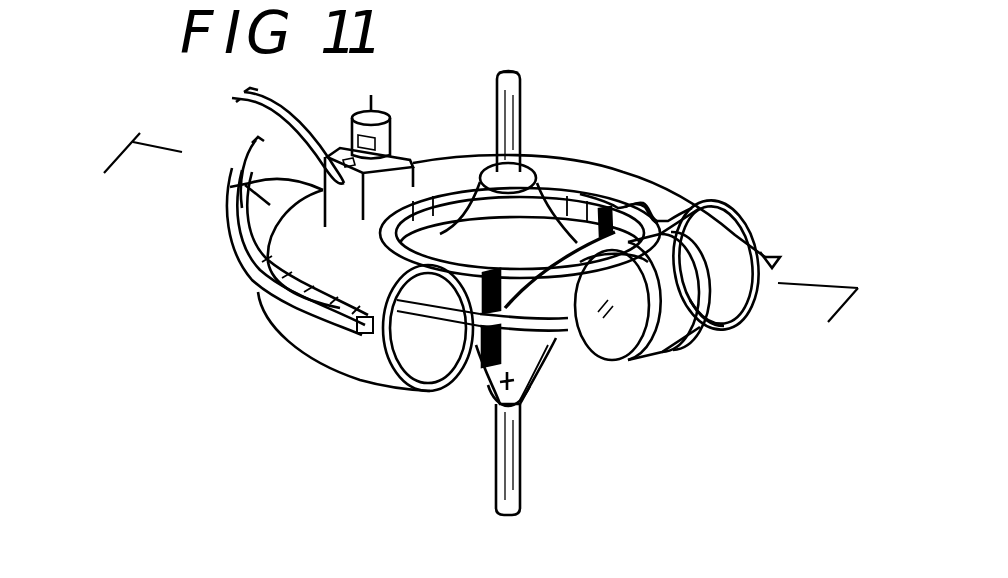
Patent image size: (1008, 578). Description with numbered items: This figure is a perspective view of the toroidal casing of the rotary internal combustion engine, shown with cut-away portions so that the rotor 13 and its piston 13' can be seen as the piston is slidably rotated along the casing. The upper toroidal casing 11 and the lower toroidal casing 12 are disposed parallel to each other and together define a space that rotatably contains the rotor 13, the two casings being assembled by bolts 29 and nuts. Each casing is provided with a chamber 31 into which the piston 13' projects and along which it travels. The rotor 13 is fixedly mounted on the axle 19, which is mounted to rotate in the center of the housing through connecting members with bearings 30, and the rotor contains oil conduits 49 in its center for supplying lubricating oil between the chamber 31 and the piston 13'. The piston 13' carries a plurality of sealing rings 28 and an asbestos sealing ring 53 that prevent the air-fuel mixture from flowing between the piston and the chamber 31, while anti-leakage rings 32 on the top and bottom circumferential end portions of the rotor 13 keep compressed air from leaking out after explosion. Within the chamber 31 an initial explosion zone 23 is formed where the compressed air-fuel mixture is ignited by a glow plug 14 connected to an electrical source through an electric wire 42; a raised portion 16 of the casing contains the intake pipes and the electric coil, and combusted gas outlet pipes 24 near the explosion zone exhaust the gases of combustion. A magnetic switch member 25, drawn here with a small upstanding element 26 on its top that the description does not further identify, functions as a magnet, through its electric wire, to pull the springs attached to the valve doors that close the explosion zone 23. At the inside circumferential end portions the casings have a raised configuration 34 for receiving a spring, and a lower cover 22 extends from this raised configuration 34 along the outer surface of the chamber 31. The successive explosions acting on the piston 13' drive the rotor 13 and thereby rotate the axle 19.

The upper toroidal casing 11 is at (630, 170).
The lower toroidal casing 12 is at (470, 250).
The rotor 13 is at (580, 340).
The piston 13' is at (614, 331).
The glow plug 14 is at (236, 200).
The raised portion 16 is at (230, 232).
The axle 19 is at (520, 120).
The lower cover 22 is at (532, 240).
The initial explosion zone 23 is at (408, 164).
The combusted gas outlet pipe 24 is at (262, 116).
The magnetic switch member 25 is at (360, 113).
The pin 26 is at (375, 104).
The sealing ring 28 is at (655, 345).
The bolt 29 is at (262, 286).
The bearing 30 is at (522, 392).
The chamber 31 is at (445, 388).
The anti-leakage ring 32 is at (640, 208).
The raised configuration 34 is at (627, 176).
The electric wire 42 is at (246, 172).
The oil conduit 49 is at (510, 74).
The asbestos sealing ring 53 is at (714, 304).